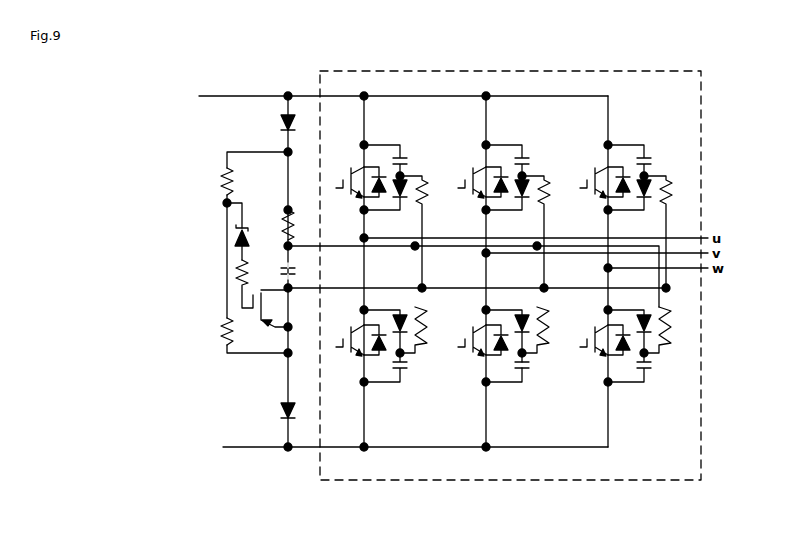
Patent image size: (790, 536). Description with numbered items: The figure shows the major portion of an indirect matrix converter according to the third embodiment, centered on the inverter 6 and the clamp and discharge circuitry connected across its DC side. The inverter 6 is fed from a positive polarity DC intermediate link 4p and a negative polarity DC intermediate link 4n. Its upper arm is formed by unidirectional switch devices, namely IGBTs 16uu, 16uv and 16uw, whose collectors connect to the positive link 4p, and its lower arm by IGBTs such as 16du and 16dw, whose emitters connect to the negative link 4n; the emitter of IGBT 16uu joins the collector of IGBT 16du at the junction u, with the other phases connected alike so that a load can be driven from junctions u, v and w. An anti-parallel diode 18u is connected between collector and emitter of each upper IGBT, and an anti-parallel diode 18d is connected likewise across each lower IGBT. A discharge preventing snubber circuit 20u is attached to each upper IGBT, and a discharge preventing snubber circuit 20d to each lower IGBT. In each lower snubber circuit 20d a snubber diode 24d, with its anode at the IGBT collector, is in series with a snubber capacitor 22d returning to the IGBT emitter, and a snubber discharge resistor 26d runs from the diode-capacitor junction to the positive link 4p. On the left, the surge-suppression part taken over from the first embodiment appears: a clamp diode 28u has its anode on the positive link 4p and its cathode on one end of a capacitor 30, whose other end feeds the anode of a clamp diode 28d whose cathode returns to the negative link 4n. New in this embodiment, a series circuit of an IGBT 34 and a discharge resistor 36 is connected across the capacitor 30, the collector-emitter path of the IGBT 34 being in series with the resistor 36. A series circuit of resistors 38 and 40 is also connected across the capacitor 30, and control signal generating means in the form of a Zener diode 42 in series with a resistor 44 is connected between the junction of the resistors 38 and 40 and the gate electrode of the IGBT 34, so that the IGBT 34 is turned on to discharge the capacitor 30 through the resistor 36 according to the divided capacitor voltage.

The positive polarity DC intermediate link 4p is at (285, 95).
The negative polarity DC intermediate link 4n is at (281, 450).
The clamp diode 28u is at (293, 134).
The clamp diode 28d is at (298, 421).
The resistor 38 is at (219, 192).
The resistor 40 is at (225, 330).
The Zener diode 42 is at (236, 240).
The resistor 44 is at (240, 278).
The discharge resistor 36 is at (284, 216).
The IGBT 34 is at (274, 308).
The capacitor 30 is at (298, 326).
The inverter 6 is at (532, 468).
The anti-parallel diode 18u is at (364, 201).
The anti-parallel diode 18d is at (378, 357).
The discharge preventing snubber circuit 20u is at (400, 130).
The discharge preventing snubber circuit 20d is at (517, 350).
The snubber capacitor 22d is at (531, 369).
The snubber diode 24d is at (528, 336).
The snubber discharge resistor 26d is at (543, 319).
The IGBT 16uu is at (372, 182).
The IGBT 16uv is at (493, 182).
The IGBT 16uw is at (615, 182).
The IGBT 16du is at (365, 341).
The IGBT 16dw is at (601, 341).